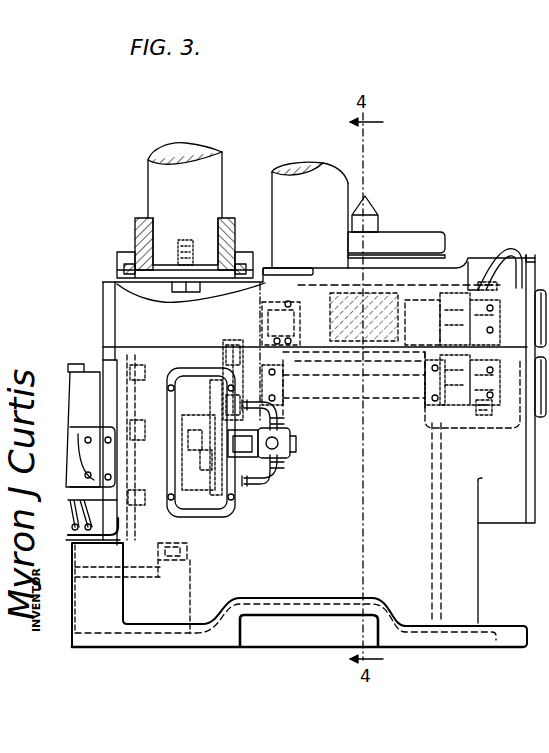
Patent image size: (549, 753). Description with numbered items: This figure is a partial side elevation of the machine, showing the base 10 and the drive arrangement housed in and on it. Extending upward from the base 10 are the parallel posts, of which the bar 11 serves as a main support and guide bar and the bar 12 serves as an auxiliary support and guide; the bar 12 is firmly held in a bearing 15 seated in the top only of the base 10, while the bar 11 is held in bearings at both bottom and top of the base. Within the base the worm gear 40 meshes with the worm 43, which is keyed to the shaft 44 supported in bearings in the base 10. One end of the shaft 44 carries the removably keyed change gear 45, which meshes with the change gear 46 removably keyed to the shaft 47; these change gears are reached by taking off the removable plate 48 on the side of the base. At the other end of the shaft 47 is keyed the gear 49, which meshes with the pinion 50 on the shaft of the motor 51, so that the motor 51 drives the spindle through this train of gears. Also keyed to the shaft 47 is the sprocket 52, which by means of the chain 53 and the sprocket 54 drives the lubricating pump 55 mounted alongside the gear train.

The base 10 is at (487, 572).
The main support and guide bar 11 is at (272, 197).
The auxiliary support and guide bar 12 is at (147, 160).
The bearing 15 is at (136, 222).
The worm gear 40 is at (263, 320).
The worm 43 is at (386, 305).
The shaft 44 is at (415, 306).
The change gear 45 is at (488, 275).
The change gear 46 is at (483, 407).
The shaft 47 is at (356, 395).
The removable plate 48 is at (537, 262).
The gear 49 is at (233, 350).
The pinion 50 is at (238, 470).
The motor 51 is at (83, 371).
The sprocket 52 is at (210, 374).
The chain 53 is at (210, 411).
The sprocket 54 is at (213, 487).
The lubricating pump 55 is at (283, 452).